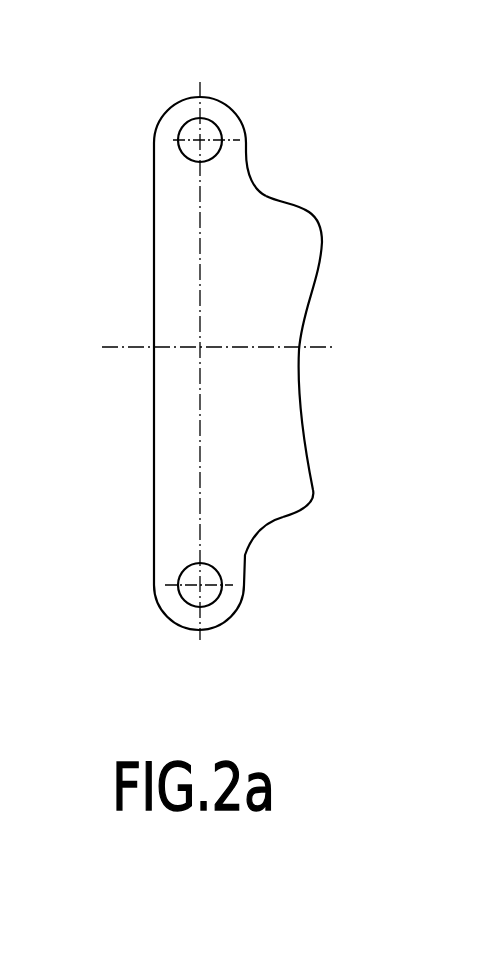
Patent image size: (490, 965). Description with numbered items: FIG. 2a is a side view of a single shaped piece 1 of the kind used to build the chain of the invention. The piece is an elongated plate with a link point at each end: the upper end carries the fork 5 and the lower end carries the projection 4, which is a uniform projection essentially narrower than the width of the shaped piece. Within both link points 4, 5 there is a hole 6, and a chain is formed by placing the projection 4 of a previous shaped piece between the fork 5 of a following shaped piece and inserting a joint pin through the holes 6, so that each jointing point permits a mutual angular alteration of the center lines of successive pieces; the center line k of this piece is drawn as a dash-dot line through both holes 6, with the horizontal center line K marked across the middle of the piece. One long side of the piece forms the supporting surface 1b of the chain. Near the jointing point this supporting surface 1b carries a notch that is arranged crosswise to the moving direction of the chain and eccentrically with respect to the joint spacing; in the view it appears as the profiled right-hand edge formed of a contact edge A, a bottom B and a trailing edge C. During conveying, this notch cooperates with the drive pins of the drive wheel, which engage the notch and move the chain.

The shaped piece 1 is at (241, 342).
The supporting surface 1b is at (322, 380).
The projection 4 is at (152, 600).
The fork 5 is at (240, 100).
The hole 6 is at (210, 148).
The contact edge A is at (302, 198).
The bottom B is at (248, 130).
The trailing edge C is at (287, 525).
The center line K is at (115, 343).